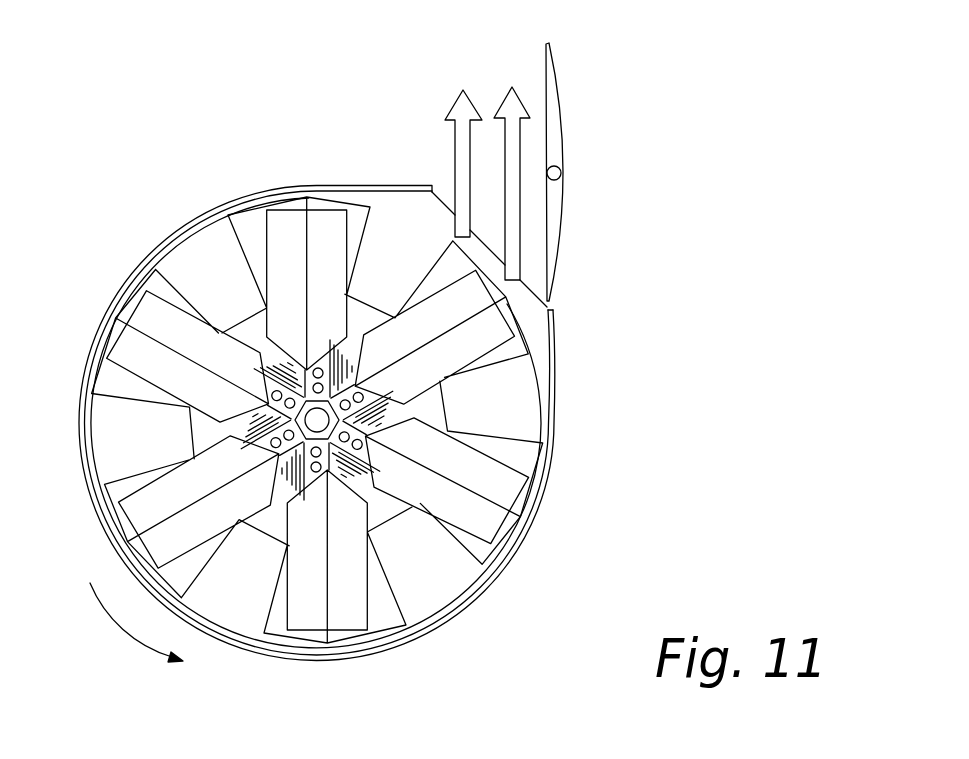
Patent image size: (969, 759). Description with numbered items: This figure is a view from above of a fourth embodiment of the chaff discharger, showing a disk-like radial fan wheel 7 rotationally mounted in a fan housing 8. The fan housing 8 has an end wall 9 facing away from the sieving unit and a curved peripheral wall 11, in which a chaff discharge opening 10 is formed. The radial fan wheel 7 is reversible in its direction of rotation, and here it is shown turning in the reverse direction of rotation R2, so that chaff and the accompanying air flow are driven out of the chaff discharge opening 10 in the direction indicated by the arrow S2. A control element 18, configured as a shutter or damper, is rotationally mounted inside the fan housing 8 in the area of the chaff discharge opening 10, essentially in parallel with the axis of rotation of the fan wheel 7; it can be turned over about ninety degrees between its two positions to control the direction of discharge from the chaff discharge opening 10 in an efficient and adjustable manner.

The radial fan wheel 7 is at (274, 660).
The fan housing 8 is at (430, 580).
The end wall 9 is at (517, 408).
The chaff discharge opening 10 is at (517, 303).
The curved peripheral wall 11 is at (550, 350).
The control element 18 is at (552, 122).
The direction of discharge S2 is at (457, 155).
The reverse direction of rotation R2 is at (117, 623).